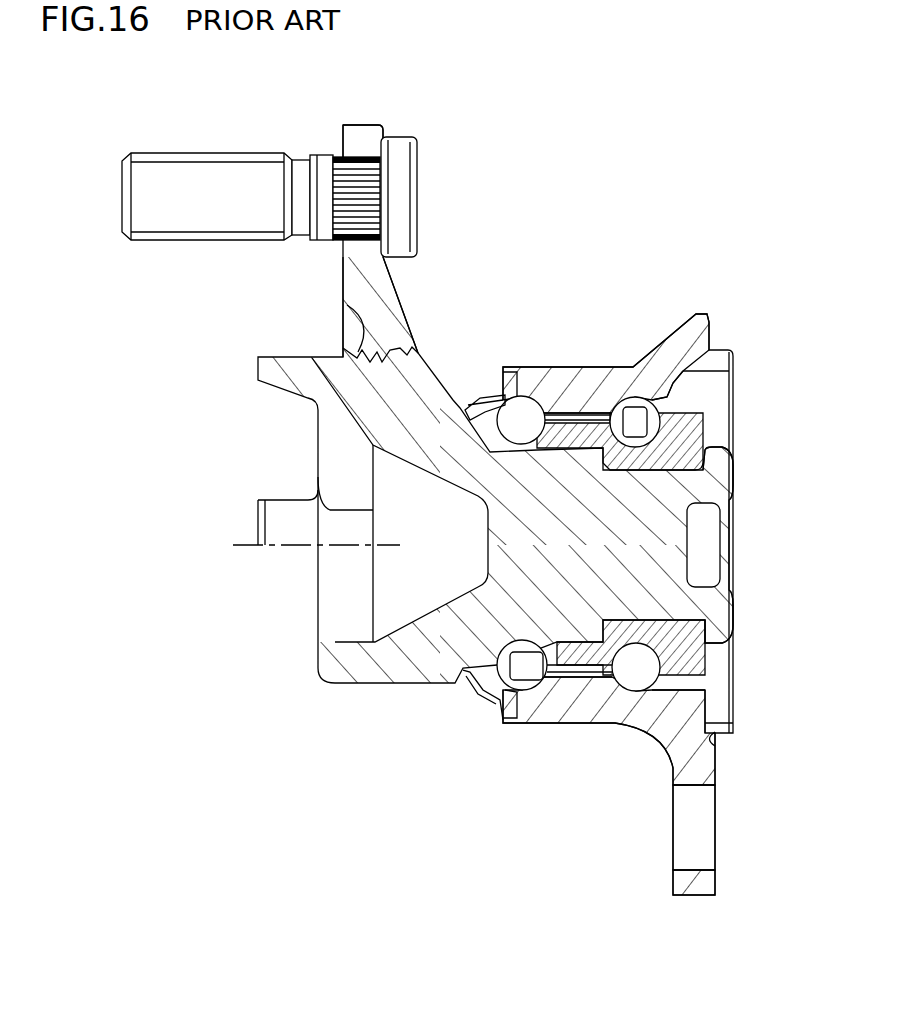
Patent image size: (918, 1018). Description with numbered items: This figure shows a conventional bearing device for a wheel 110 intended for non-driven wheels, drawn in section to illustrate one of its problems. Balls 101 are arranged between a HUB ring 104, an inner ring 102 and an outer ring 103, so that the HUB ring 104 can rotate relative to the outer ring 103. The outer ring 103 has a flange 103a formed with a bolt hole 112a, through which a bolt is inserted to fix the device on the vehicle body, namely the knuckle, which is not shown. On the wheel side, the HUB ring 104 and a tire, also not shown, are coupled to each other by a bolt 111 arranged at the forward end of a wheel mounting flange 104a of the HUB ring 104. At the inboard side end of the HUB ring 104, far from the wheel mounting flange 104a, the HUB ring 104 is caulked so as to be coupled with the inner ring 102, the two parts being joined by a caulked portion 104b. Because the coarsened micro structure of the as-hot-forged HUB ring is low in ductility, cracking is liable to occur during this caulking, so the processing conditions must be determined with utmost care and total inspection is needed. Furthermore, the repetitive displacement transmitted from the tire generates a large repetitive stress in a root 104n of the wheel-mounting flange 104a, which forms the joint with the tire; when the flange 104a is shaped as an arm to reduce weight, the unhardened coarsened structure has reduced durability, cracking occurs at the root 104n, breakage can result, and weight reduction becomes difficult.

The balls 101 is at (523, 417).
The inner ring 102 is at (690, 437).
The outer ring 103 is at (650, 371).
The flange 103a is at (693, 884).
The HUB ring 104 is at (623, 540).
The wheel mounting flange 104a is at (367, 137).
The caulked portion 104b is at (720, 477).
The root of wheel-mounting flange 104n is at (382, 340).
The bearing device for a wheel 110 is at (662, 164).
The bolt 111 is at (170, 190).
The bolt hole 112a is at (692, 870).